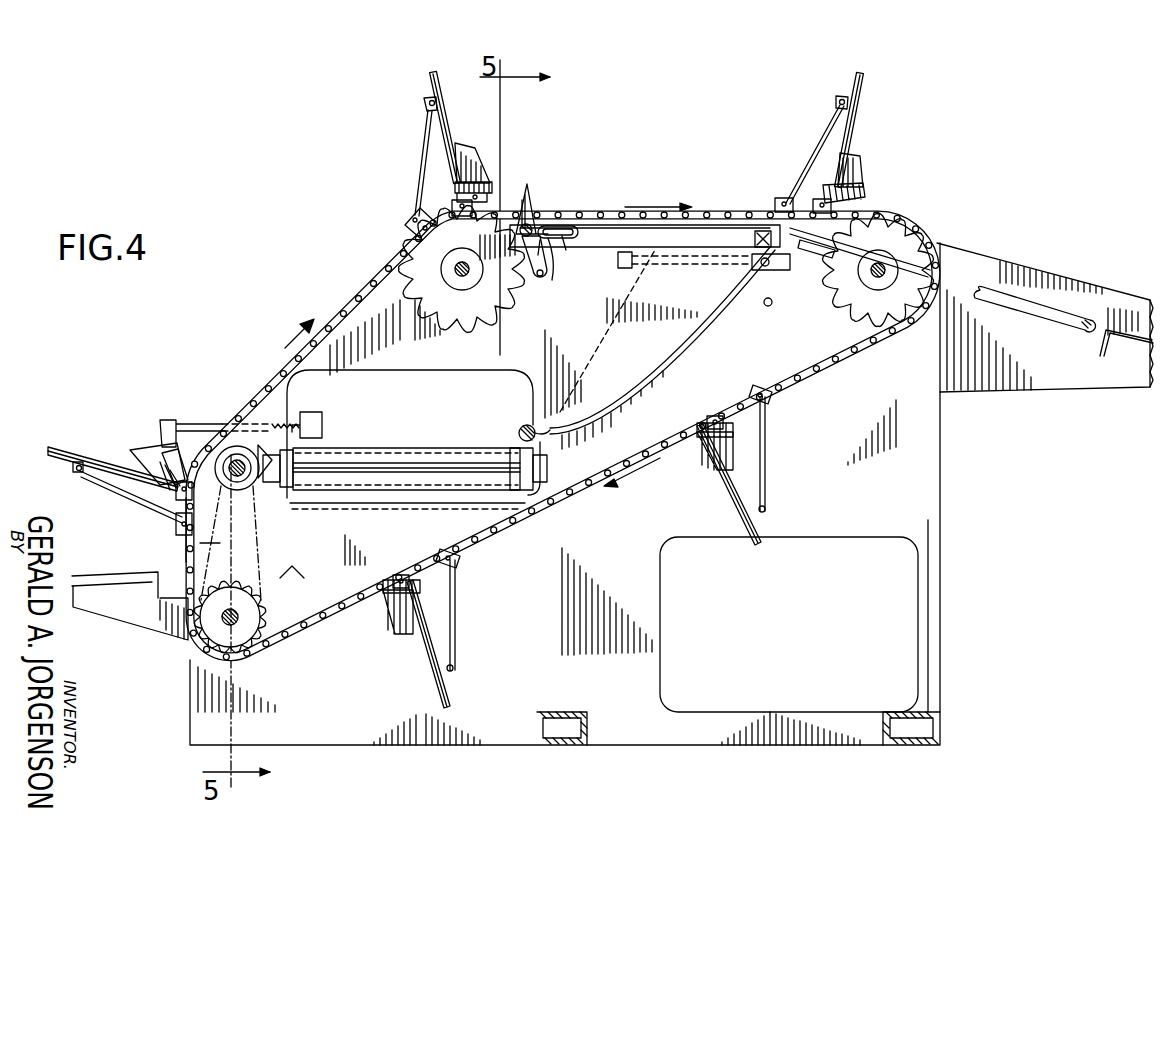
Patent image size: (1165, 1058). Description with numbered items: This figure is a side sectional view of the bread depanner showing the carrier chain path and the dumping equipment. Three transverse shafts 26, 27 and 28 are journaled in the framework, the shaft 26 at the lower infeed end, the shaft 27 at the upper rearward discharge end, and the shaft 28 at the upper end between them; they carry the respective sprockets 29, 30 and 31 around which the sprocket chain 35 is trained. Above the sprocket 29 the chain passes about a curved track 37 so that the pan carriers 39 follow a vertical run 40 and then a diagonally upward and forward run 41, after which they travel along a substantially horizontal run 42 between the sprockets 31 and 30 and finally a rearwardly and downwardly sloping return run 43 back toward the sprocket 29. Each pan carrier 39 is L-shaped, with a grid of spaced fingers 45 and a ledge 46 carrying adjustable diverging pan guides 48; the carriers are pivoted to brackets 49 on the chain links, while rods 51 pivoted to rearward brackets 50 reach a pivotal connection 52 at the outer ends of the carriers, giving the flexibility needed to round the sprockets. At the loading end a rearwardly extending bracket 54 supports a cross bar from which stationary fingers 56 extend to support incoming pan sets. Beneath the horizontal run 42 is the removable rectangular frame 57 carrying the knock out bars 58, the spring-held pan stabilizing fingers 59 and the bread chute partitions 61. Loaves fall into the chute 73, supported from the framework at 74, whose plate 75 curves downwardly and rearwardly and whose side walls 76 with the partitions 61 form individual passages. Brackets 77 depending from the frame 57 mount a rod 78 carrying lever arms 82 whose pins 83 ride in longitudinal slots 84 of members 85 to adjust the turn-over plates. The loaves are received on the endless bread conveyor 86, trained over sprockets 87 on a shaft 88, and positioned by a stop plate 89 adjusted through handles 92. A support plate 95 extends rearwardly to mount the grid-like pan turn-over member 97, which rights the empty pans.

The shaft 26 is at (234, 622).
The shaft 27 is at (878, 278).
The shaft 28 is at (462, 277).
The sprocket 29 is at (245, 598).
The sprocket 30 is at (840, 300).
The sprocket 31 is at (492, 300).
The sprocket chain 35 is at (650, 211).
The curved track 37 is at (244, 480).
The pan carrier 39 is at (430, 73).
The vertical run 40 is at (185, 548).
The diagonally upward and forward run 41 is at (325, 335).
The horizontal run 42 is at (783, 204).
The return run 43 is at (585, 482).
The fingers 45 is at (445, 118).
The ledge 46 is at (490, 188).
The pan guides 48 is at (480, 160).
The brackets 49 is at (472, 206).
The brackets 50 is at (410, 218).
The rods 51 is at (424, 140).
The pivotal connection 52 is at (425, 104).
The bracket 54 is at (155, 628).
The stationary fingers 56 is at (108, 586).
The rectangular frame 57 is at (660, 254).
The knock out bars 58 is at (625, 237).
The pan stabilizing fingers 59 is at (532, 192).
The bread chute partitions 61 is at (532, 390).
The chute 73 is at (662, 368).
The chute support 74 is at (690, 264).
The plate 75 is at (712, 330).
The side walls 76 is at (590, 375).
The brackets 77 is at (532, 266).
The rod 78 is at (546, 274).
The lever arms 82 is at (541, 250).
The pins 83 is at (557, 231).
The longitudinal slots 84 is at (574, 226).
The members 85 is at (566, 246).
The endless bread conveyor 86 is at (420, 447).
The sprockets 87 is at (287, 470).
The shaft 88 is at (400, 470).
The stop plate 89 is at (320, 420).
The handles 92 is at (176, 425).
The pan turn-over support plate 95 is at (1030, 268).
The pan turn-over member 97 is at (1106, 328).